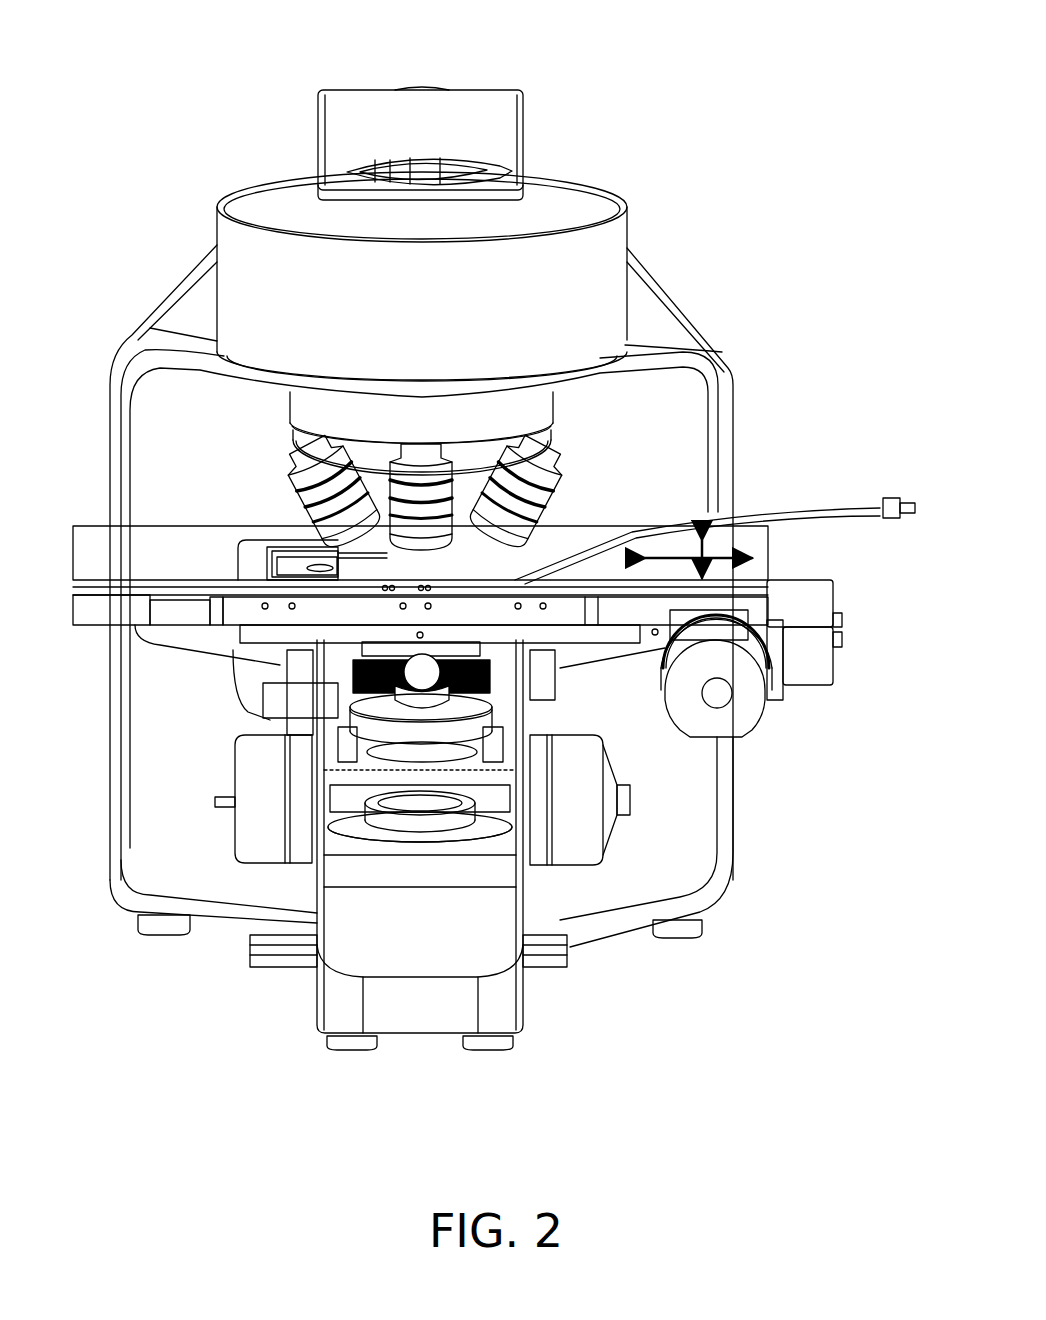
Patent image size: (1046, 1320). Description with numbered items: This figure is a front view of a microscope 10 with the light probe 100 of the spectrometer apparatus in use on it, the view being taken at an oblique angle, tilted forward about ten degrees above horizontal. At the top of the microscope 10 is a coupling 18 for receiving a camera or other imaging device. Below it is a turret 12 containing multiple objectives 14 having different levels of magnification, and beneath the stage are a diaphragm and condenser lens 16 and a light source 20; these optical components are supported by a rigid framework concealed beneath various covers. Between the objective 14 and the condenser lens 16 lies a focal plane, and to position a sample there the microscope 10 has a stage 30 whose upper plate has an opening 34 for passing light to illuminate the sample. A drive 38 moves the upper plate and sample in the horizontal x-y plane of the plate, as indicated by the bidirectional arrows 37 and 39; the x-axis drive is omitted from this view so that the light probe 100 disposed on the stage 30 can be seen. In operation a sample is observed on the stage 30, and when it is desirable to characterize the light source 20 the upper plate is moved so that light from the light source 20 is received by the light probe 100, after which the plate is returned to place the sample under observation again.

The microscope 10 is at (752, 158).
The turret 12 is at (535, 429).
The objectives 14 is at (422, 490).
The diaphragm and condenser lens 16 is at (482, 731).
The coupling 18 is at (422, 87).
The light source 20 is at (420, 847).
The stage 30 is at (86, 520).
The opening 34 is at (285, 573).
The bidirectional arrow 37 is at (705, 553).
The drive 38 is at (817, 607).
The bidirectional arrow 39 is at (735, 555).
The light probe 100 is at (355, 567).